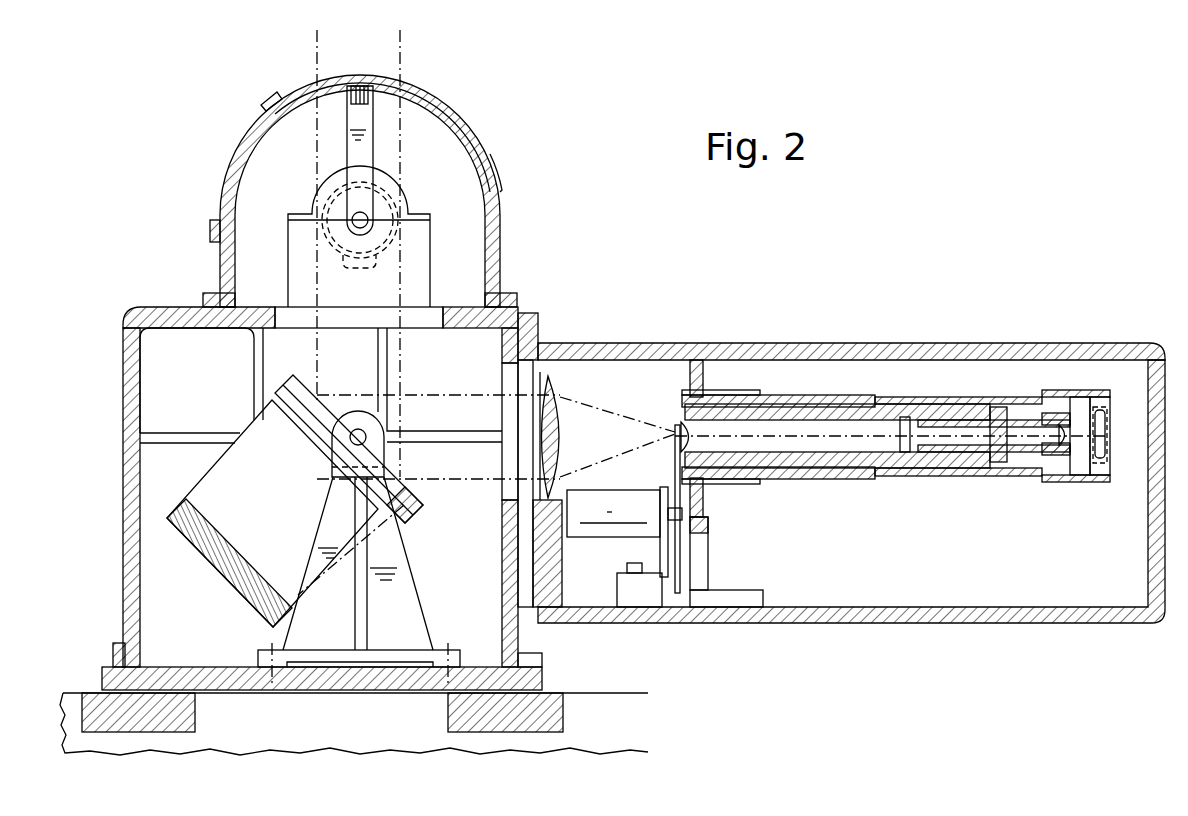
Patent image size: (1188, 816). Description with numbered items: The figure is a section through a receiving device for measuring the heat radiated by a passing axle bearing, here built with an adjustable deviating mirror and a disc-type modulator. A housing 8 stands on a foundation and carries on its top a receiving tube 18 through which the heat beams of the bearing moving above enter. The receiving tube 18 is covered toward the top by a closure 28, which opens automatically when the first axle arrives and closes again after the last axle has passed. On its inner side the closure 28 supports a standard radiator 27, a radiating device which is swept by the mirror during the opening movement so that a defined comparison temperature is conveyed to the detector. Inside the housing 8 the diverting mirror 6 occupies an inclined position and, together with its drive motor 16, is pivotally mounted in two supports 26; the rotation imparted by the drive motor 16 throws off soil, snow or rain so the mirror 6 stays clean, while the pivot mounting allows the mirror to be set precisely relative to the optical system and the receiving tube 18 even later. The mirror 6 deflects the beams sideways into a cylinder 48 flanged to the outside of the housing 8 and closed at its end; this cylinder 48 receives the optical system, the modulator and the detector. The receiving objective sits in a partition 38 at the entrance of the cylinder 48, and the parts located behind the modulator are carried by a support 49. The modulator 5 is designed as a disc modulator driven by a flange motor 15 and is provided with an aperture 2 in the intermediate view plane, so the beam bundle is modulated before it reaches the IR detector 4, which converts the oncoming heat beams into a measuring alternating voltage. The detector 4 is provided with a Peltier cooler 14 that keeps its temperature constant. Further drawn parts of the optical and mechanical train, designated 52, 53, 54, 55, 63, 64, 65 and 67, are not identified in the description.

The aperture 2 is at (896, 441).
The IR detector 4 is at (1078, 412).
The modulator 5 is at (680, 568).
The diverting mirror 6 is at (300, 392).
The housing 8 is at (168, 313).
The Peltier cooler 14 is at (1100, 420).
The flange motor 15 is at (577, 527).
The drive motor 16 is at (190, 540).
The receiving tube 18 is at (497, 232).
The supports 26 is at (412, 608).
The standard radiator 27 is at (354, 84).
The closure 28 is at (278, 108).
The partition 38 is at (557, 592).
The cylinder 48 is at (743, 350).
The support 49 is at (700, 545).
The objective lens 52 is at (563, 417).
The field lens 53 is at (680, 440).
The eyepiece lens element 54 is at (1052, 418).
The detector 55 is at (663, 548).
The inner tube 63 is at (895, 412).
The eyepiece tube 64 is at (1032, 452).
The outer tube 65 is at (825, 398).
The collar 67 is at (1083, 482).